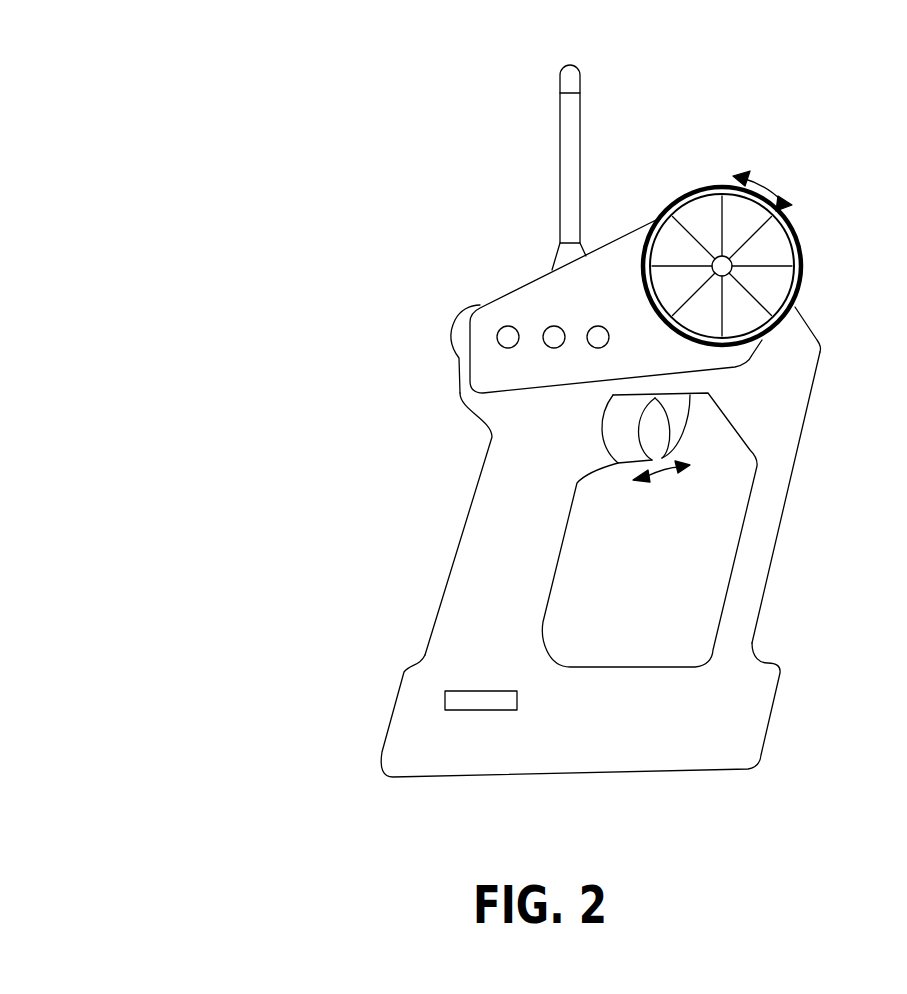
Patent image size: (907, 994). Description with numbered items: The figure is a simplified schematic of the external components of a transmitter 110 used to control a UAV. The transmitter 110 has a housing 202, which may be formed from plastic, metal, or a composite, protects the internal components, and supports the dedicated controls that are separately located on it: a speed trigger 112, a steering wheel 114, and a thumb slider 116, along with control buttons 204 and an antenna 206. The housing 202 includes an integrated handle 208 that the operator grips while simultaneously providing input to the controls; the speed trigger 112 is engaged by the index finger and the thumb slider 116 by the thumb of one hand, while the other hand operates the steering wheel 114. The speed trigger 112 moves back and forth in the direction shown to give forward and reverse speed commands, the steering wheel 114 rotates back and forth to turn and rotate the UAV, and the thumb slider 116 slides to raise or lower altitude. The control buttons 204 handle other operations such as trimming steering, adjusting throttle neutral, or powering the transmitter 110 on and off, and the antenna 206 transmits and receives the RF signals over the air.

The transmitter 110 is at (180, 58).
The speed trigger 112 is at (688, 423).
The steering wheel 114 is at (802, 261).
The thumb slider 116 is at (422, 342).
The housing 202 is at (398, 694).
The control buttons 204 is at (554, 326).
The antenna 206 is at (580, 107).
The handle 208 is at (483, 528).